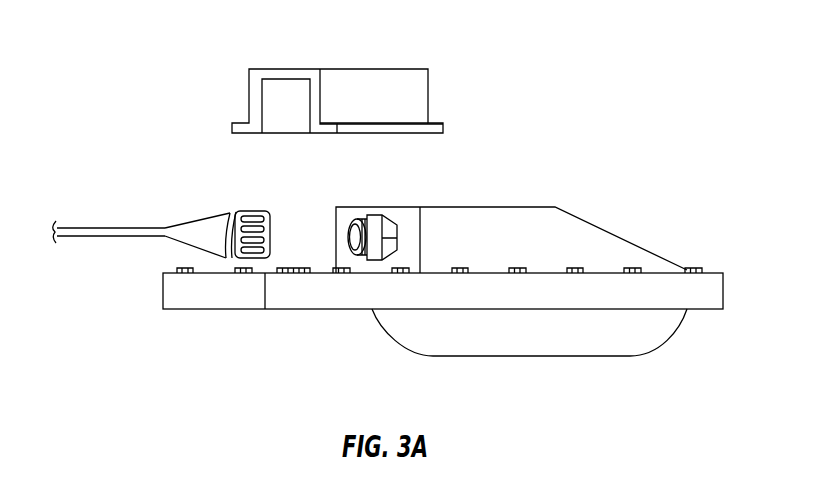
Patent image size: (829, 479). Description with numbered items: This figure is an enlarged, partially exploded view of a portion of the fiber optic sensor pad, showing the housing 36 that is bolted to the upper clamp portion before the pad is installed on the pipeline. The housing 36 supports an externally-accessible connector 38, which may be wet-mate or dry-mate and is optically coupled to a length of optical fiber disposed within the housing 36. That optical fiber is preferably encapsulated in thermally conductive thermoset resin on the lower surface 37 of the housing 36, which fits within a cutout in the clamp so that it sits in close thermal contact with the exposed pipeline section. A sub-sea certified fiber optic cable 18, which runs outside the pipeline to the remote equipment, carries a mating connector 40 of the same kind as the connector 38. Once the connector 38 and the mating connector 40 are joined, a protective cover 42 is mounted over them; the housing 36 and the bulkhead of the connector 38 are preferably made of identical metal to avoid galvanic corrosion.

The fiber optic cable 18 is at (113, 228).
The housing 36 is at (530, 208).
The lower surface 37 is at (515, 357).
The connector 38 is at (368, 217).
The mating connector 40 is at (233, 213).
The protective cover 42 is at (303, 69).